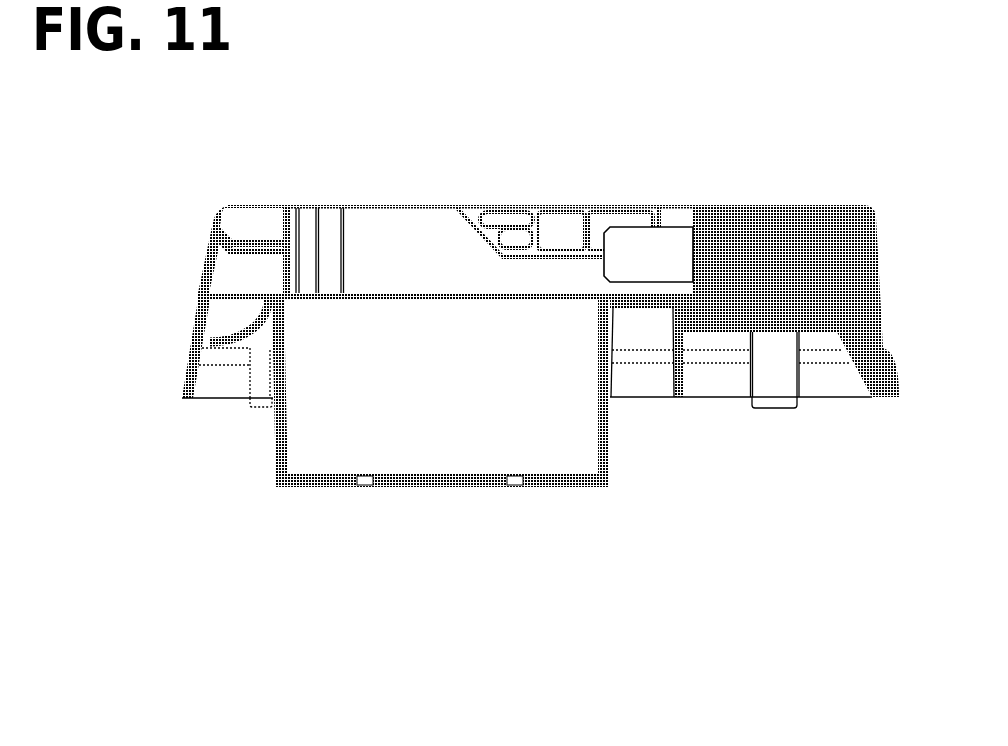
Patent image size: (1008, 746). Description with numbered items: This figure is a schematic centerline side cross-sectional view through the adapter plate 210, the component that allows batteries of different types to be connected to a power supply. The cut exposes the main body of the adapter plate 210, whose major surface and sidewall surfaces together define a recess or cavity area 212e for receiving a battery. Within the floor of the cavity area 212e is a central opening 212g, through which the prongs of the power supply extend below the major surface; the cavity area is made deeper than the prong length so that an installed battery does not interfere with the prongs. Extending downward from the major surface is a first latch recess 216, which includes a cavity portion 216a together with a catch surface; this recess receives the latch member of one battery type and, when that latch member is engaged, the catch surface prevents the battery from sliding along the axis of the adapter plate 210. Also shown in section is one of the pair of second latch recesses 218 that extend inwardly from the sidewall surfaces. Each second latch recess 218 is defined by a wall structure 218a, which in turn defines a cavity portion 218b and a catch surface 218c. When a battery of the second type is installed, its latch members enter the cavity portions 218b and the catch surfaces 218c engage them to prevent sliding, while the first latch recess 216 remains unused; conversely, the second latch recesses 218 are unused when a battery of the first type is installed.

The adapter plate 210 is at (745, 212).
The recess or cavity area 212e is at (273, 442).
The central opening 212g is at (460, 480).
The first latch recess 216 is at (228, 308).
The cavity portion 216a is at (188, 317).
The second latch recess 218 is at (210, 228).
The wall structure 218a is at (300, 218).
The cavity portion 218b is at (250, 225).
The catch surface 218c is at (222, 233).